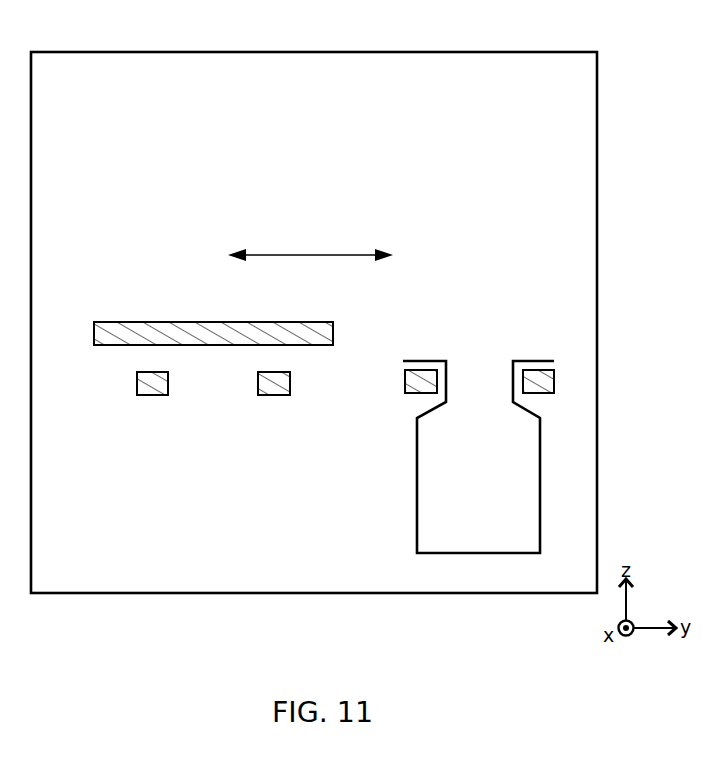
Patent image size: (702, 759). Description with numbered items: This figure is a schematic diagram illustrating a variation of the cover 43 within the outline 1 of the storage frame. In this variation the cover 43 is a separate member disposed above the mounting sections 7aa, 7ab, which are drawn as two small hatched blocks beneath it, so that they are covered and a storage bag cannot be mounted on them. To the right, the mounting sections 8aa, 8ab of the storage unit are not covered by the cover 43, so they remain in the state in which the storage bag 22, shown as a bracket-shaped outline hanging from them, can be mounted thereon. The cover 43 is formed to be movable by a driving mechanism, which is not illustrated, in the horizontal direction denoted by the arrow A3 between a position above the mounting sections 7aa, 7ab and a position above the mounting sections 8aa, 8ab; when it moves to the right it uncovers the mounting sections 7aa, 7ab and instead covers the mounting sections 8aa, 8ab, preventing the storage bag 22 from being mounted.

The substrate / base plate 1 is at (127, 53).
The arrow A3 is at (310, 242).
The cover 43 is at (140, 322).
The mounting section 7aa is at (150, 395).
The mounting section 7ab is at (271, 395).
The mounting section 8aa is at (405, 378).
The mounting section 8ab is at (554, 378).
The storage bag 22 is at (417, 505).